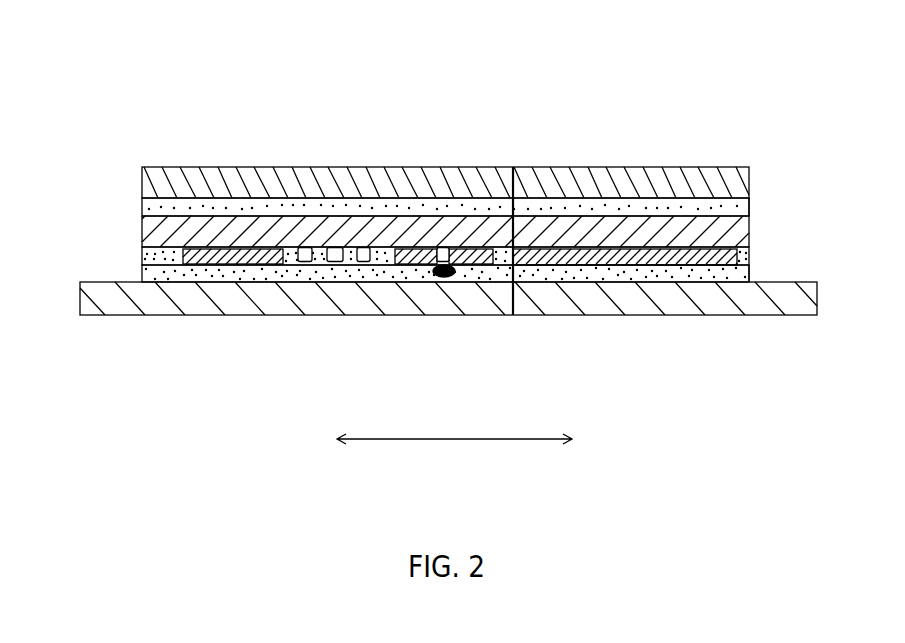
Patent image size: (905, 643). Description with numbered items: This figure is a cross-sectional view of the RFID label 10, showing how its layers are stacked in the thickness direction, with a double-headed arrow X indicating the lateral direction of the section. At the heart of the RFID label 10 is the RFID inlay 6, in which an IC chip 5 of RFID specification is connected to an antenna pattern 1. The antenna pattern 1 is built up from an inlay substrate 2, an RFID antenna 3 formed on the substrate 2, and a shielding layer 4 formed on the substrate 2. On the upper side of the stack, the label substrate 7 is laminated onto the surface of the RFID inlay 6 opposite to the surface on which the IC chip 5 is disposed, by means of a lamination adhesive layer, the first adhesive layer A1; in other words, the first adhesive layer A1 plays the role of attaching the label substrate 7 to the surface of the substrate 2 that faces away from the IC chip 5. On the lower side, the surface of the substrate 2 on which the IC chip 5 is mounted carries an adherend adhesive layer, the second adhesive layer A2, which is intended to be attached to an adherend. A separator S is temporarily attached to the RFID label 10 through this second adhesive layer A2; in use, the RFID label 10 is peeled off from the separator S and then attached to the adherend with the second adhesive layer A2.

The RFID label 10 is at (632, 112).
The label substrate 7 is at (749, 176).
The RFID inlay 6 is at (55, 203).
The antenna pattern 1 is at (90, 193).
The inlay substrate 2 is at (145, 221).
The shielding layer 4 is at (544, 246).
The RFID antenna 3 is at (183, 255).
The IC chip 5 is at (433, 272).
The first adhesive layer A1 is at (749, 210).
The second adhesive layer A2 is at (749, 273).
The separator S is at (817, 305).
The X direction X is at (454, 418).